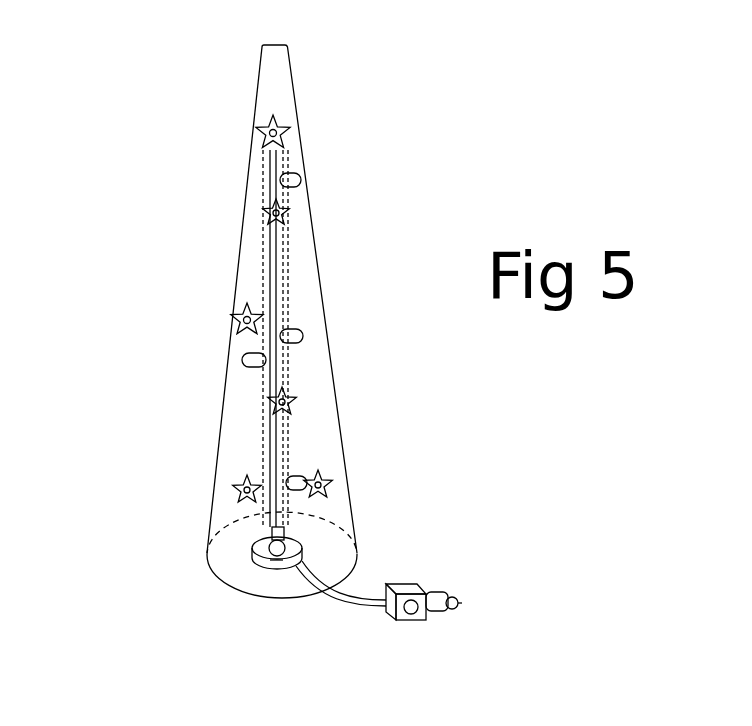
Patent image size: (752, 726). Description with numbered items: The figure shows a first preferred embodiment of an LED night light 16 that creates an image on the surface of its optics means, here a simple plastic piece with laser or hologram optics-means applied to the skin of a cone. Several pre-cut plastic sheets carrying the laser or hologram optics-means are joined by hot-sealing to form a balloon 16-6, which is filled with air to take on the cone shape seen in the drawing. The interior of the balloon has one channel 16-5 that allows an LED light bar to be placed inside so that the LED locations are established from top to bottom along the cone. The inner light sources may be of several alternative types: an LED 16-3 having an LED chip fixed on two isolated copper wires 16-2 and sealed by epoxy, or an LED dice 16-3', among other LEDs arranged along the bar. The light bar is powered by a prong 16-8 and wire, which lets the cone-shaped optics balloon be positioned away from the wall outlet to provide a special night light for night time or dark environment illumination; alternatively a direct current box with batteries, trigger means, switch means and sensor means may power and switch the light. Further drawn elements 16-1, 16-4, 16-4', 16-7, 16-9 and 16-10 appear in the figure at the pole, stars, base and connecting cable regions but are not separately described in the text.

The christmas tree ornament / display device 16 is at (301, 123).
The central pole / tube 16-1 is at (294, 272).
The isolated copper wires 16-2 is at (260, 152).
The LED 16-3 is at (197, 197).
The LED dice 16-3' is at (354, 389).
The star 16-4 is at (167, 299).
The star 16-4' is at (168, 452).
The channel 16-5 is at (257, 540).
The balloon 16-6 is at (205, 553).
The base connector 16-7 is at (266, 575).
The prong 16-8 is at (466, 604).
The cable 16-9 is at (314, 552).
The control unit 16-10 is at (431, 587).